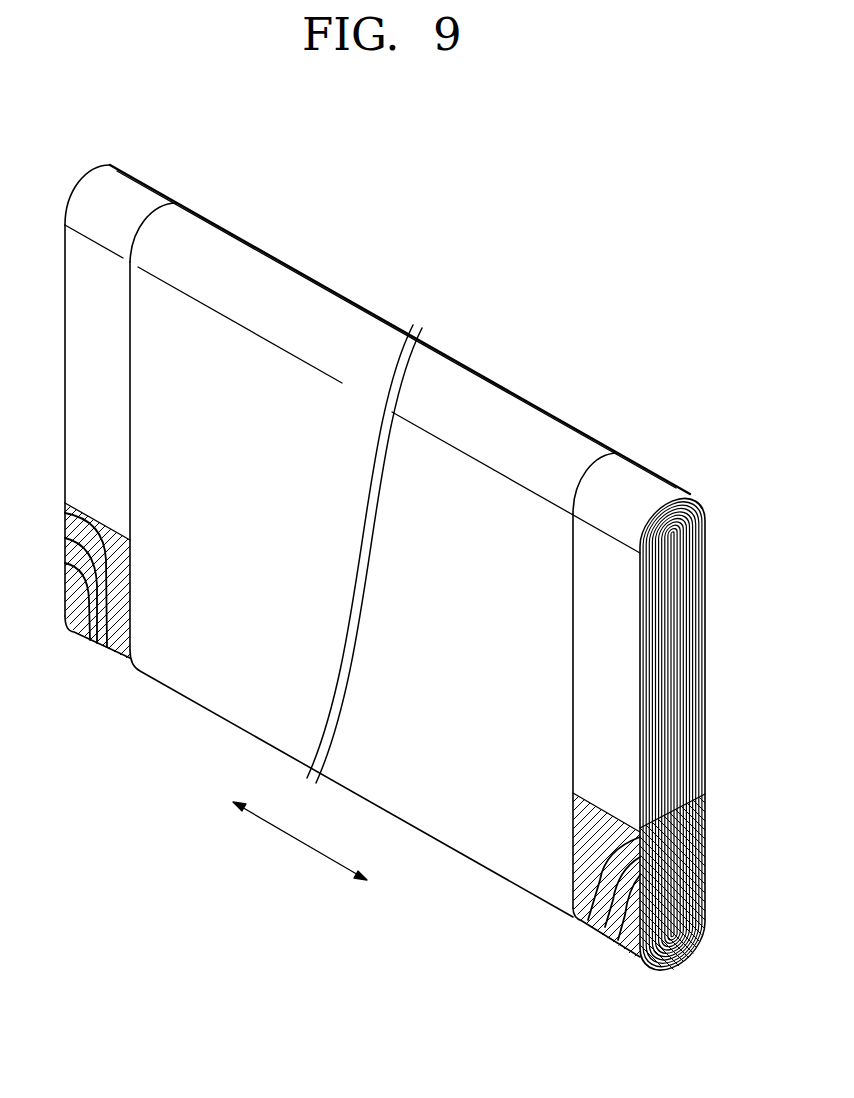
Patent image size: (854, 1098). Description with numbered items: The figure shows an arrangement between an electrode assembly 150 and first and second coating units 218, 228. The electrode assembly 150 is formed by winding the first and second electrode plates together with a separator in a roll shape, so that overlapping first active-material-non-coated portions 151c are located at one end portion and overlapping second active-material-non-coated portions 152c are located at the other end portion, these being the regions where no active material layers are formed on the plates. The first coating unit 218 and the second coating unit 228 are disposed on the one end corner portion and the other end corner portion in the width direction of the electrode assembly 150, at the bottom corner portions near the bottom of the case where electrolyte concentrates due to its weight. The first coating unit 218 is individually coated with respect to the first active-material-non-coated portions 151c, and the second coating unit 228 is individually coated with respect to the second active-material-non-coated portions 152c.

The electrode assembly 150 is at (517, 420).
The second active-material-non-coated portion 152c is at (133, 195).
The first active-material-non-coated portion 151c is at (652, 483).
The second coating unit 228 is at (117, 660).
The first coating unit 218 is at (632, 947).